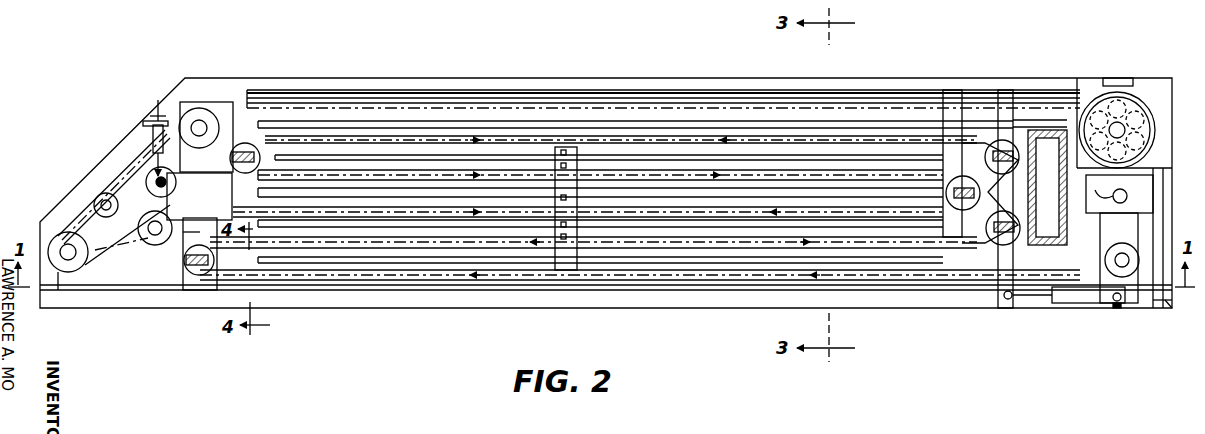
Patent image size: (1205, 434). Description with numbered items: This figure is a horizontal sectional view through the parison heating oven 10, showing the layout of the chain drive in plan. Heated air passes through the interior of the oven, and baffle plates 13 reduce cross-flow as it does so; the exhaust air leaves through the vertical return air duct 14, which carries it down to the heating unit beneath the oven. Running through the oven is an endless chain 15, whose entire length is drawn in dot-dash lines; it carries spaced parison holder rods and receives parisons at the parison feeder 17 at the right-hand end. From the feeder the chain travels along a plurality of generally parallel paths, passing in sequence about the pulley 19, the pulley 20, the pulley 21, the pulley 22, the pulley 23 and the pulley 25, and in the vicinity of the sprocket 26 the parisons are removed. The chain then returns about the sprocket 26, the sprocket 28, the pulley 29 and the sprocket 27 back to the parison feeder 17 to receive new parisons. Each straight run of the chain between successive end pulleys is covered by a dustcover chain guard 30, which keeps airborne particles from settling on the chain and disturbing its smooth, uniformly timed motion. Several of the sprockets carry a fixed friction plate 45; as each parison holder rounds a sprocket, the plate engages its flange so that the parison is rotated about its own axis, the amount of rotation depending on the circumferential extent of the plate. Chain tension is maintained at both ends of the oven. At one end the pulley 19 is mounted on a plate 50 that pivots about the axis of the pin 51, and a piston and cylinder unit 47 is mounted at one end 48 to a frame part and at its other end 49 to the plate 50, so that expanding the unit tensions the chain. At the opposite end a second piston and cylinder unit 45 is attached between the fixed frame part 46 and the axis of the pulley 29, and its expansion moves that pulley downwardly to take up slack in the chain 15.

The parison heating oven 10 is at (393, 318).
The baffle plates 13 is at (487, 108).
The vertical return air duct 14 is at (1045, 130).
The endless chain 15 is at (1143, 185).
The parison feeder 17 is at (1163, 138).
The pulley 19 is at (1140, 255).
The pulley 20 is at (198, 286).
The pulley 21 is at (992, 242).
The pulley 22 is at (965, 150).
The pulley 23 is at (233, 177).
The pulley 25 is at (150, 240).
The sprocket 26 is at (60, 238).
The sprocket 27 is at (199, 108).
The sprocket 28 is at (98, 196).
The pulley 29 is at (148, 178).
The chain guard 30 is at (847, 133).
The friction plate 45 is at (143, 143).
The fixed frame part 46 is at (153, 123).
The piston and cylinder unit 47 is at (1093, 300).
The end 48 is at (1008, 300).
The end 49 is at (1120, 300).
The plate 50 is at (1163, 300).
The pin 51 is at (1108, 191).